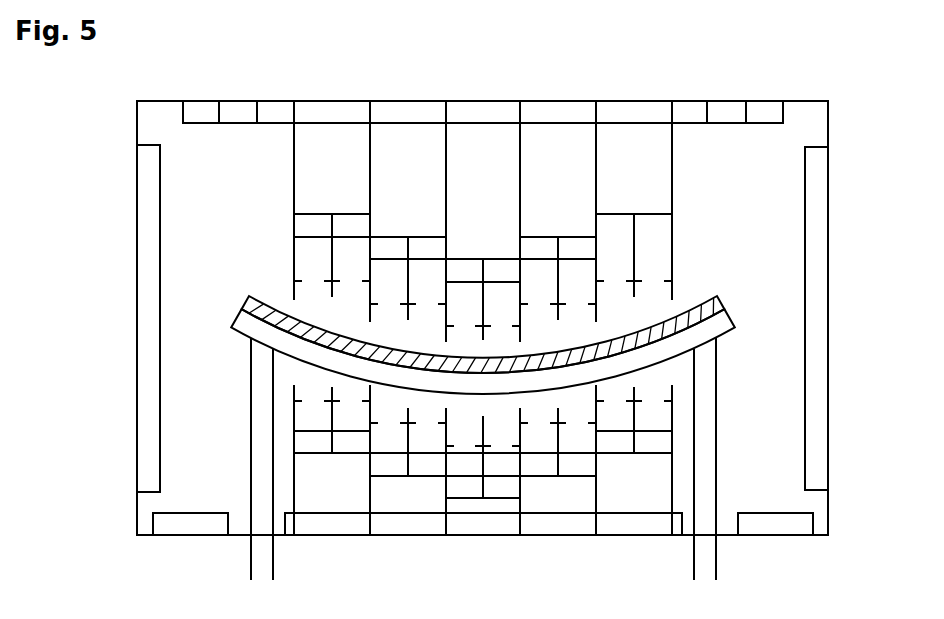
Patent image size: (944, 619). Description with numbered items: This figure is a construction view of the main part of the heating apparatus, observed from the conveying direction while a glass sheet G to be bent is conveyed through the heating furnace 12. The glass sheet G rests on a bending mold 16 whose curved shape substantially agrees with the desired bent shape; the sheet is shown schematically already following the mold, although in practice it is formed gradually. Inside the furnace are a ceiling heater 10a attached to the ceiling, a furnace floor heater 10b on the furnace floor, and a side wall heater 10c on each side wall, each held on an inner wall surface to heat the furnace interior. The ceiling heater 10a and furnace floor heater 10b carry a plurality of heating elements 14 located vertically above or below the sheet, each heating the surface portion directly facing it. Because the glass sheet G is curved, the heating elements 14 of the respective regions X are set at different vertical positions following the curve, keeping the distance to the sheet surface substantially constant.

The heating furnace 12 is at (118, 121).
The ceiling heater 10a is at (481, 112).
The furnace floor heater 10b is at (190, 524).
The side wall heater 10c is at (150, 320).
The heating elements 14 is at (313, 227).
The regions X is at (615, 257).
The bending mold 16 is at (730, 333).
The glass sheet G is at (692, 302).